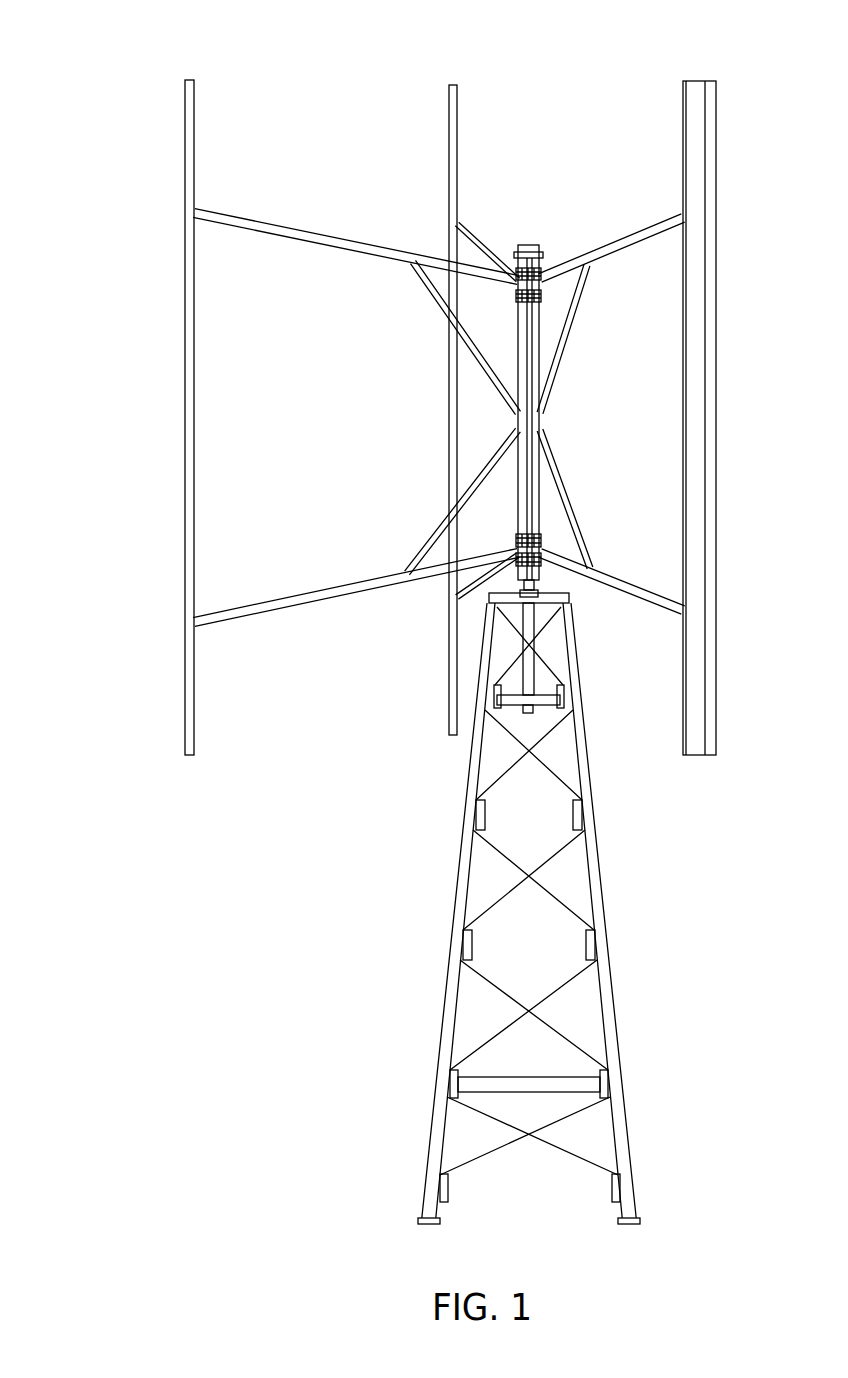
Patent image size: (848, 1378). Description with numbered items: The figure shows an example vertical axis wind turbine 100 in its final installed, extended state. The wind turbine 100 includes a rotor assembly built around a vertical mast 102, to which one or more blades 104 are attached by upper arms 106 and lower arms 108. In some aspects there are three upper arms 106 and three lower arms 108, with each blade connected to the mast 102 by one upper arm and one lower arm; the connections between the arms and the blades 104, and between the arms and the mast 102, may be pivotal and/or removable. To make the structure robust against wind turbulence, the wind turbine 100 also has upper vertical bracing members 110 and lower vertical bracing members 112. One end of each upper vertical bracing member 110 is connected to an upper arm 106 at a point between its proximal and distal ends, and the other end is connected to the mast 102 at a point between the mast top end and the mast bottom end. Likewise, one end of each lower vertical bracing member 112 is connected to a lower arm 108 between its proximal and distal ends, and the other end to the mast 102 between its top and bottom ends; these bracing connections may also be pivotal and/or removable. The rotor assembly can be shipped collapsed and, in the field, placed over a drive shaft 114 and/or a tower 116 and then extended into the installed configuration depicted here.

The vertical axis wind turbine 100 is at (145, 40).
The vertical mast 102 is at (518, 355).
The blades 104 is at (185, 112).
The upper arms 106 is at (268, 222).
The lower arms 108 is at (243, 605).
The upper vertical bracing members 110 is at (416, 297).
The lower vertical bracing members 112 is at (432, 545).
The drive shaft 114 is at (500, 687).
The tower 116 is at (455, 1000).